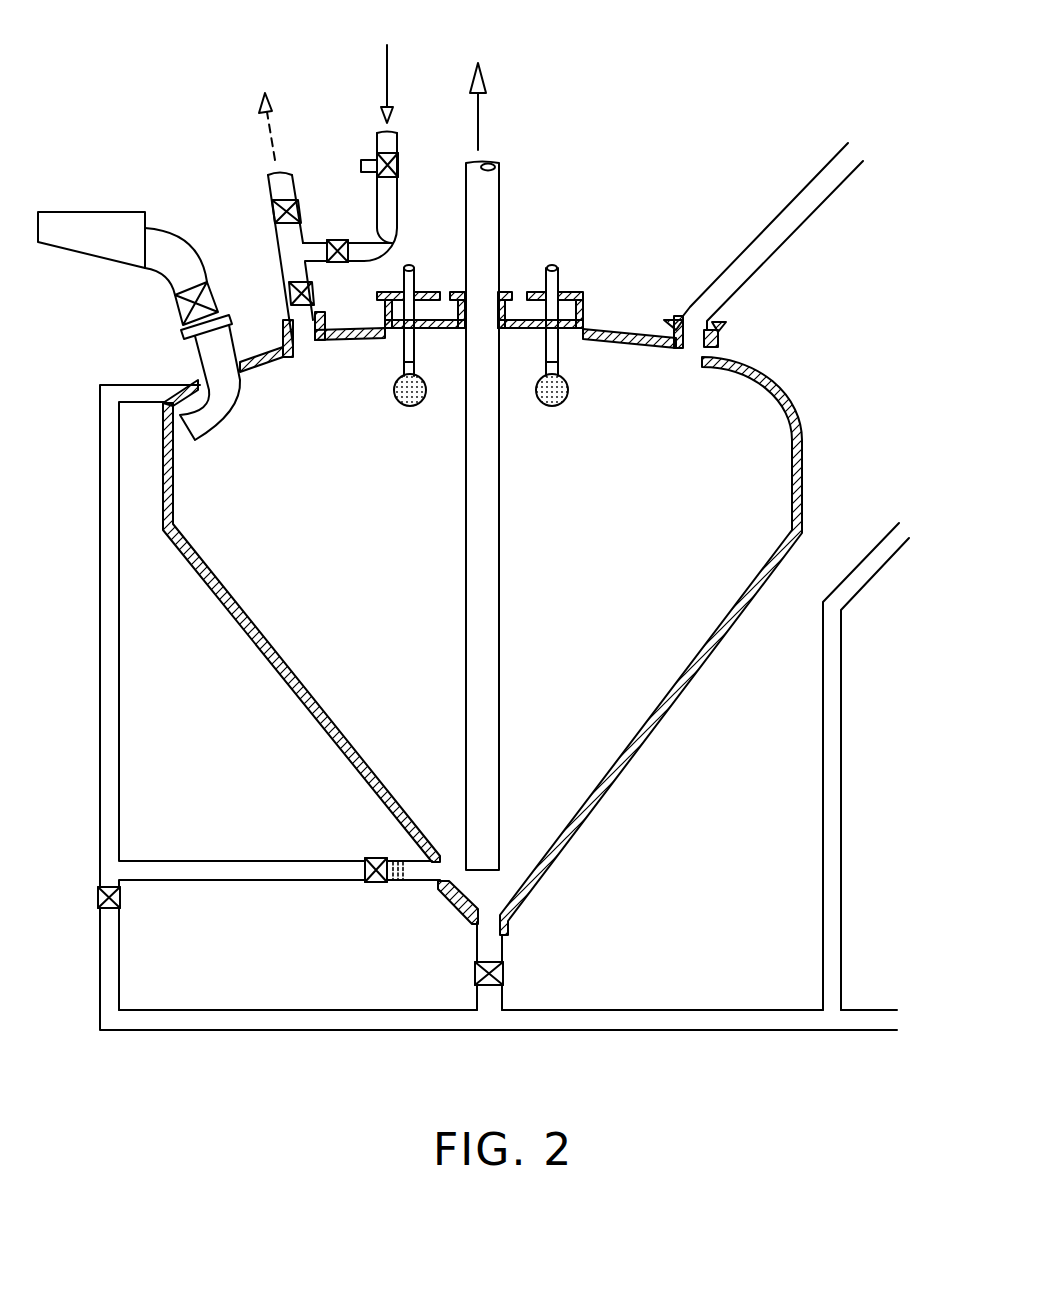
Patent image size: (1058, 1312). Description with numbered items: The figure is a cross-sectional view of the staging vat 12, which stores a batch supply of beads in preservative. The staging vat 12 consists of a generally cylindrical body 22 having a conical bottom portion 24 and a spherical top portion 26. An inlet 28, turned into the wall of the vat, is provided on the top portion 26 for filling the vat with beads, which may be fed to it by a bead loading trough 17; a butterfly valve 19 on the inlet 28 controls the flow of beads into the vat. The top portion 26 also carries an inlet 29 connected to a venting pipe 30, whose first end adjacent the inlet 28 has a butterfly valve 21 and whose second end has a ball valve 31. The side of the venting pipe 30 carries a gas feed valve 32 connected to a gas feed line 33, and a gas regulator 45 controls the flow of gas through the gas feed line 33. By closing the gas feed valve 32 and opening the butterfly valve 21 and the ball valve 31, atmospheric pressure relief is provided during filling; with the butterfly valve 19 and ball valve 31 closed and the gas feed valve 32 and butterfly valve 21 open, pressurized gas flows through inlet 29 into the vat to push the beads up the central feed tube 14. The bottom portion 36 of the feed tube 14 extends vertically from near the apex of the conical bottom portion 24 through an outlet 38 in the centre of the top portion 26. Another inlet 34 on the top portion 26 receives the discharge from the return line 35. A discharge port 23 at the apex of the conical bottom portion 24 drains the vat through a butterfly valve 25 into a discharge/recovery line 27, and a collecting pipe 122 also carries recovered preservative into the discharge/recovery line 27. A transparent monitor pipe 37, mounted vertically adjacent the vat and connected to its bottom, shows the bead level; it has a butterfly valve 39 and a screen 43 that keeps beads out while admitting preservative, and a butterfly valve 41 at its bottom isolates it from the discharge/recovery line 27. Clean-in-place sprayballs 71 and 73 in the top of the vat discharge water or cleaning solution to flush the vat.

The staging vat 12 is at (617, 207).
The central feed tube 14 is at (499, 214).
The bead loading trough 17 is at (96, 212).
The butterfly valve 19 is at (172, 306).
The butterfly valve 21 is at (314, 296).
The cylindrical body 22 is at (804, 428).
The discharge port 23 is at (503, 940).
The conical bottom portion 24 is at (322, 740).
The butterfly valve 25 is at (474, 972).
The spherical top portion 26 is at (605, 330).
The discharge/recovery line 27 is at (696, 1030).
The inlet 28 is at (192, 368).
The inlet 29 is at (283, 332).
The venting pipe 30 is at (283, 268).
The ball valve 31 is at (270, 212).
The gas feed valve 32 is at (330, 240).
The gas feed line 33 is at (398, 232).
The inlet 34 is at (722, 345).
The return line 35 is at (760, 240).
The bottom portion of feed tube 36 is at (500, 580).
The transparent monitor pipe 37 is at (119, 722).
The outlet 38 is at (508, 300).
The butterfly valve 39 is at (372, 857).
The butterfly valve 41 is at (121, 897).
The screen 43 is at (398, 888).
The gas regulator 45 is at (370, 155).
The sprayball 71 is at (406, 405).
The sprayball 73 is at (562, 402).
The collecting pipe 122 is at (822, 720).